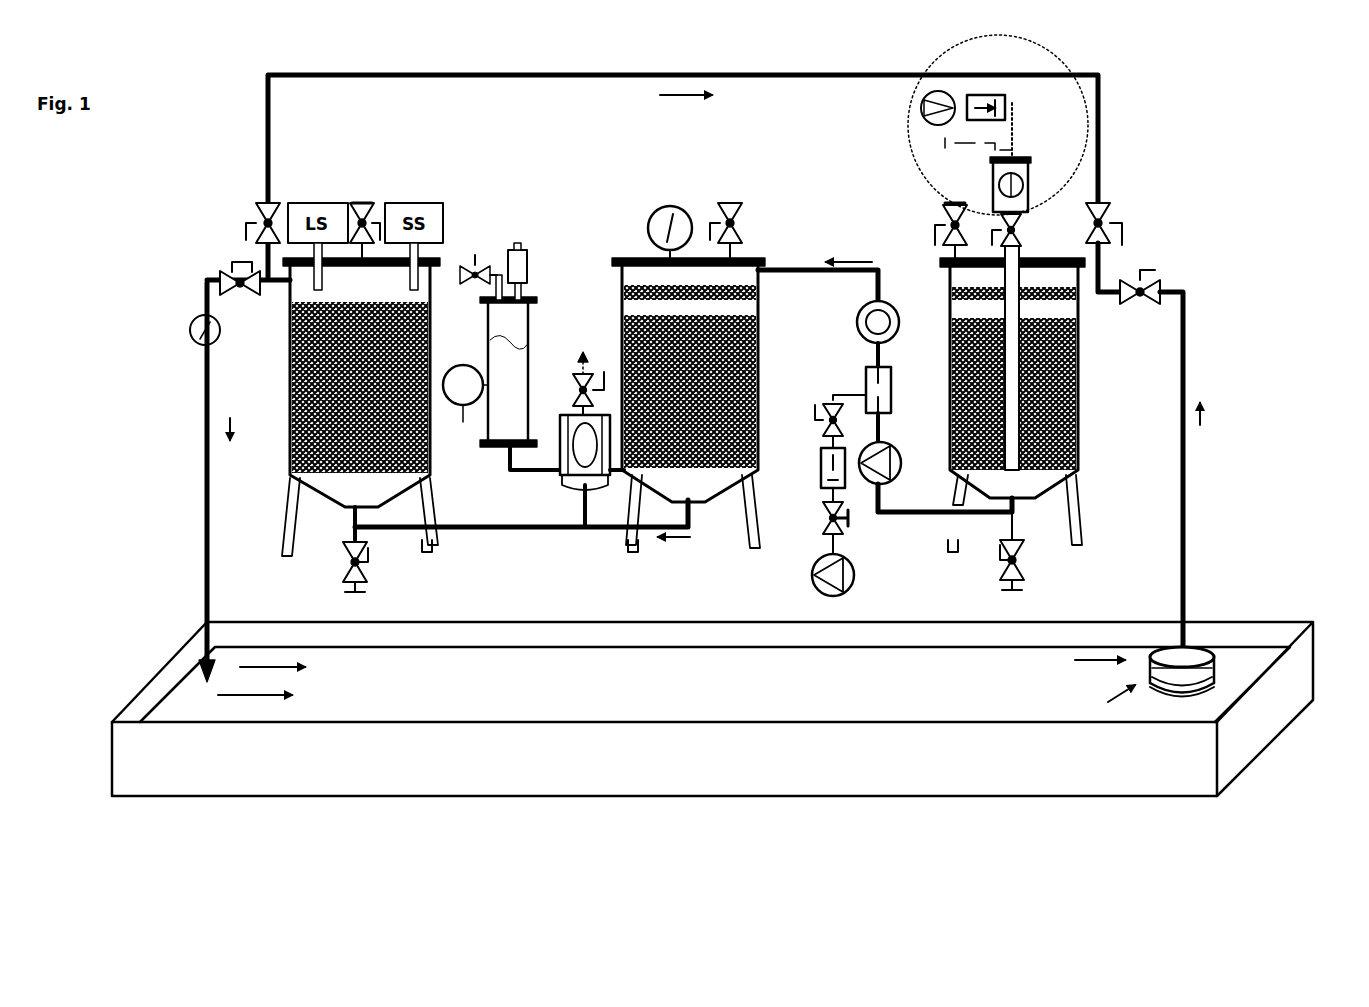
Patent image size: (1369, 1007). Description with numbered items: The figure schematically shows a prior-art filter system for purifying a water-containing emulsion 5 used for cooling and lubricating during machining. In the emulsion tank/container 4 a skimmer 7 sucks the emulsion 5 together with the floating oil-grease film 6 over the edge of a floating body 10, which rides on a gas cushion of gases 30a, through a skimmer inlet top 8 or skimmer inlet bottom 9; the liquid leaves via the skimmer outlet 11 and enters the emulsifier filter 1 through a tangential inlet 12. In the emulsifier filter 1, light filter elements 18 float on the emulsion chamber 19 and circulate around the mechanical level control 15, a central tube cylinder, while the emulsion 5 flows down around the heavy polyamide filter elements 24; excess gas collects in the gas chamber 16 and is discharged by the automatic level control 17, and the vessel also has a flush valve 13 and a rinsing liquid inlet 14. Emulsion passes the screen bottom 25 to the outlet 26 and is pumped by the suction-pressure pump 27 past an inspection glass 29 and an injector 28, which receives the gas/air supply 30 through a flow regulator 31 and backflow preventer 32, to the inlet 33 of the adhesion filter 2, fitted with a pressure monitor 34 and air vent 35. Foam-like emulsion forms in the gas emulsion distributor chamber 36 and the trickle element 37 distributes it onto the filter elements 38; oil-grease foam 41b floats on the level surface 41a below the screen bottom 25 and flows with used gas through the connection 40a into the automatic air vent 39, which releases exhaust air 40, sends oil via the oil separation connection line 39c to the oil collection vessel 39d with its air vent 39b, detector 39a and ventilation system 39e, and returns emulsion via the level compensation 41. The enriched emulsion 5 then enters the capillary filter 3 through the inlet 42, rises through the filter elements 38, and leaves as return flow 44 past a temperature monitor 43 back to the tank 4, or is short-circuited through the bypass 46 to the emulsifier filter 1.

The emulsifier filter 1 is at (1080, 460).
The adhesion filter 2 is at (630, 258).
The capillary filter 3 is at (289, 340).
The emulsion tank/container 4 is at (133, 745).
The emulsion 5 is at (480, 455).
The oil-grease film 6 is at (510, 350).
The skimmer 7 is at (1193, 645).
The skimmer inlet, top 8 is at (1228, 650).
The skimmer inlet, bottom 9 is at (1215, 695).
The floating body 10 is at (1212, 662).
The skimmer outlet 11 is at (1187, 545).
The tangential inlet 12 is at (1128, 245).
The flush valve 13 is at (365, 188).
The rinsing liquid inlet 14 is at (345, 593).
The mechanical level control 15 is at (1060, 355).
The gas chamber 16 is at (1042, 270).
The automatic level control 17 is at (905, 133).
The filter elements 1 kg/dm³ 18 is at (950, 292).
The emulsion chamber 19 is at (1060, 312).
The filter elements 1 kg/dm³ 24 is at (1078, 410).
The screen bottom 25 is at (1072, 500).
The outlet of emulsifier filter 26 is at (925, 515).
The suction-pressure pump 27 is at (897, 448).
The injector 28 is at (866, 386).
The inspection glass 29 is at (856, 324).
The gas/air supply 30 is at (855, 580).
The gases 30a is at (825, 550).
The flow regulator 31 is at (822, 518).
The backflow preventer 32 is at (822, 474).
The inlet of adhesion filter 33 is at (795, 268).
The pressure monitor 34 is at (667, 205).
The air vent 35 is at (733, 203).
The gas emulsion distributor chamber 36 is at (640, 280).
The trickle element 37 is at (625, 296).
The filter elements 38 is at (290, 404).
The automatic air vent 39 is at (572, 418).
The detector 39a is at (497, 403).
The air vent 39b is at (472, 262).
The oil separation connection line 39c is at (540, 530).
The oil collection vessel 39d is at (525, 470).
The ventilation system 39e is at (512, 243).
The exhaust air 40 is at (584, 352).
The oil-grease/exhaust-air connection 40a is at (612, 542).
The level compensation 41 is at (580, 540).
The level surface 41a is at (695, 505).
The oil-grease foam 41b is at (752, 478).
The capillary filter inlet 42 is at (352, 522).
The temperature monitor 43 is at (192, 325).
The return flow 44 is at (204, 525).
The bypass 46 is at (266, 128).